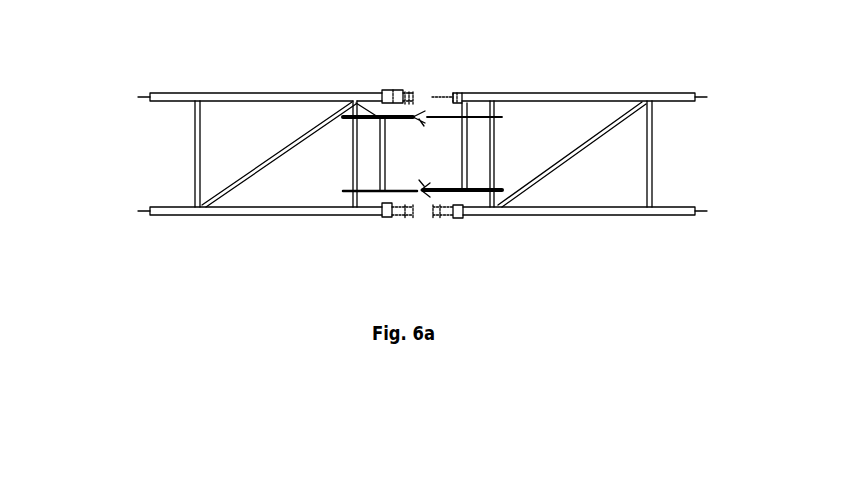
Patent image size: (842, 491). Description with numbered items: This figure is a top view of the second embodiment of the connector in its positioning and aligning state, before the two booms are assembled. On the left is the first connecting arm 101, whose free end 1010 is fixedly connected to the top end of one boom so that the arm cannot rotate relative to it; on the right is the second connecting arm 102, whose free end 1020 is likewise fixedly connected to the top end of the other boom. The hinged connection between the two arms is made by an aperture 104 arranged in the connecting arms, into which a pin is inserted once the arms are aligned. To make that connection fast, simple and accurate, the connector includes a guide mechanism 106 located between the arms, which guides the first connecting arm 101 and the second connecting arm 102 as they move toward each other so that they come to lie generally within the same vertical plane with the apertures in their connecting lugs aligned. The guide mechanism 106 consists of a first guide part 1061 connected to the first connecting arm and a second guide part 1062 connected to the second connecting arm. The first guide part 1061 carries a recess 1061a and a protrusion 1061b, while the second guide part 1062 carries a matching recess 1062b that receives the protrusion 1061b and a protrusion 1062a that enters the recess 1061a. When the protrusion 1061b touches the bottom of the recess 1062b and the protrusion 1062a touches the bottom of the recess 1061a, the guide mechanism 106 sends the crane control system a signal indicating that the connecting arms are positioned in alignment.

The first connecting arm 101 is at (213, 96).
The free end of first connecting arm 1010 is at (135, 215).
The second connecting arm 102 is at (608, 94).
The free end of second connecting arm 1020 is at (717, 205).
The aperture 104 is at (405, 92).
The guide mechanism 106 is at (367, 157).
The first guide part 1061 is at (352, 99).
The recess 1061a is at (420, 112).
The protrusion 1061b is at (412, 197).
The second guide part 1062 is at (458, 100).
The protrusion 1062a is at (428, 114).
The recess 1062b is at (428, 197).